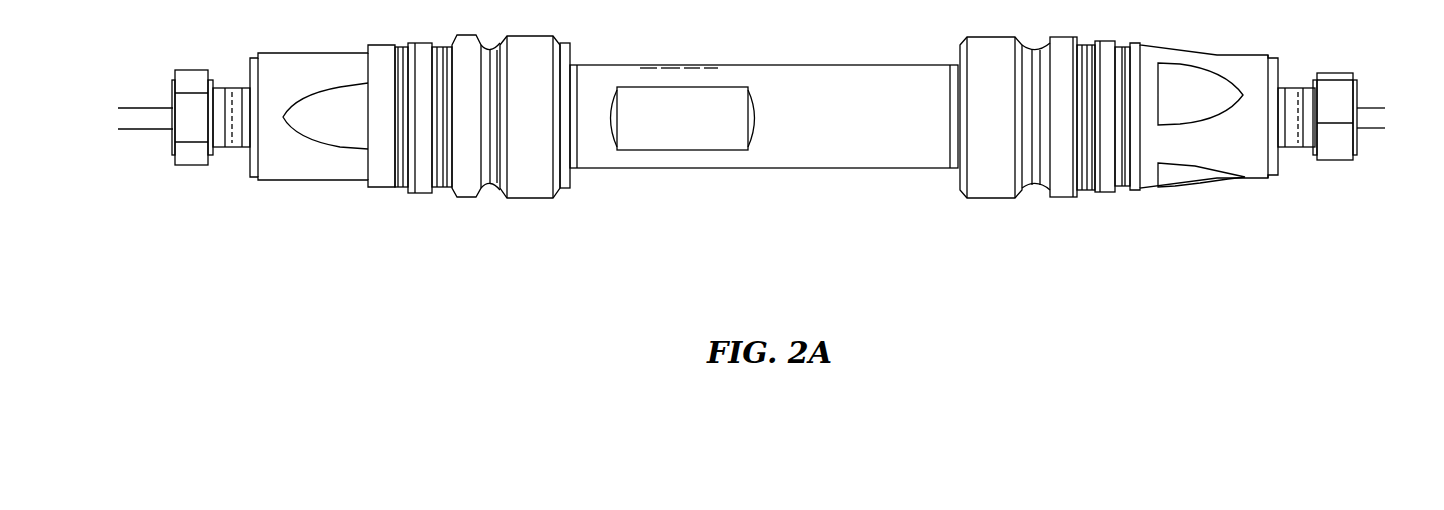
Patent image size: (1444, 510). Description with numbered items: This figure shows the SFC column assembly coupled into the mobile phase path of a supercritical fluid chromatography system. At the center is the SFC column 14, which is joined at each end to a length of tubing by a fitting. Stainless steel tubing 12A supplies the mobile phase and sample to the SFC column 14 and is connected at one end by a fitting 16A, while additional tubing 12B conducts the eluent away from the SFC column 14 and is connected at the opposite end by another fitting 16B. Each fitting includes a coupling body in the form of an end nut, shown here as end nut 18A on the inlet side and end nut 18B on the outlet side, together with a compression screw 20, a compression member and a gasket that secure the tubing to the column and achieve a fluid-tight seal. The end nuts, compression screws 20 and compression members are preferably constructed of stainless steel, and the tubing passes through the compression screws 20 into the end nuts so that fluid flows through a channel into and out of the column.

The stainless steel tubing 12A is at (134, 107).
The tubing 12B is at (1372, 108).
The SFC column 14 is at (958, 250).
The fitting 16A is at (568, 245).
The fitting 16B is at (1353, 253).
The end nut 18A is at (460, 197).
The end nut 18B is at (1063, 198).
The compression screw 20 is at (187, 167).